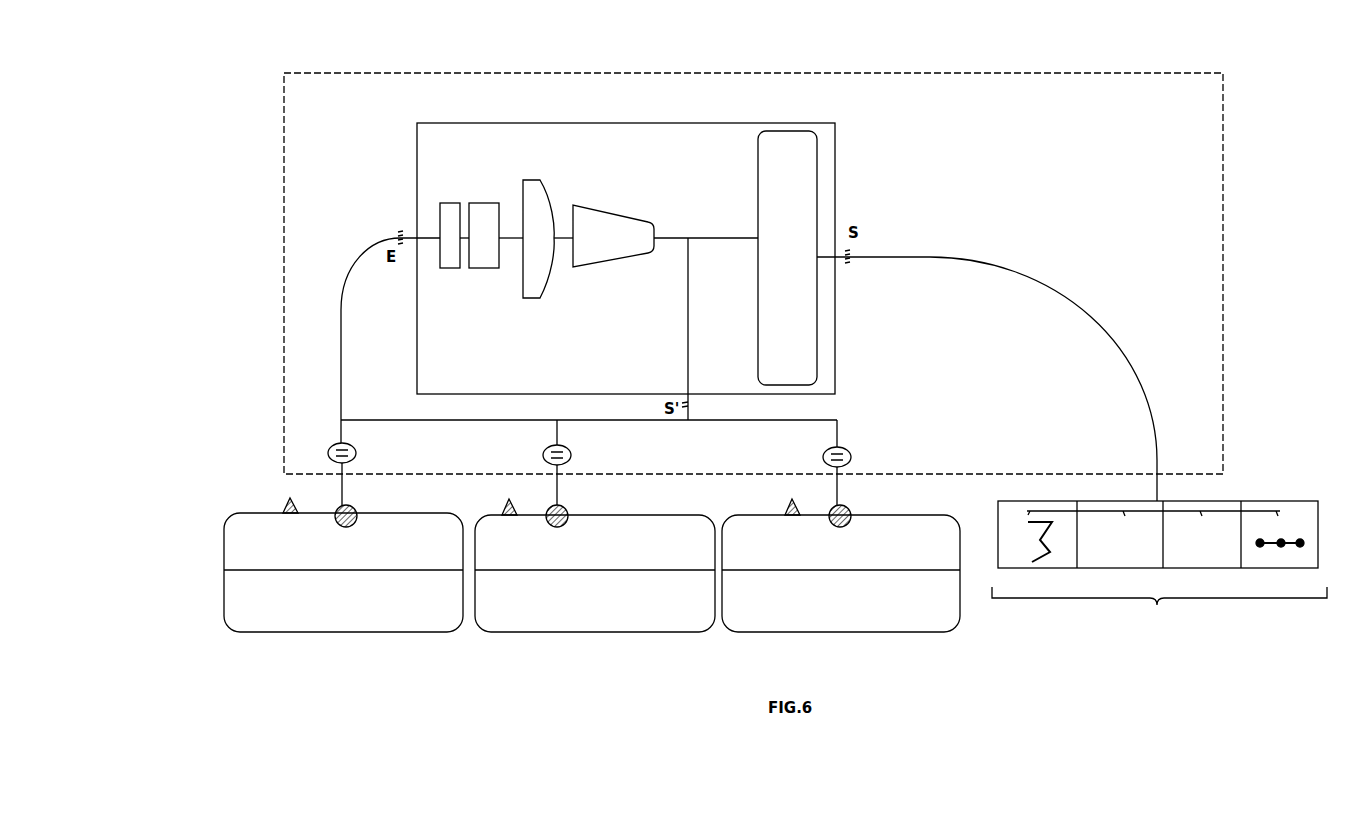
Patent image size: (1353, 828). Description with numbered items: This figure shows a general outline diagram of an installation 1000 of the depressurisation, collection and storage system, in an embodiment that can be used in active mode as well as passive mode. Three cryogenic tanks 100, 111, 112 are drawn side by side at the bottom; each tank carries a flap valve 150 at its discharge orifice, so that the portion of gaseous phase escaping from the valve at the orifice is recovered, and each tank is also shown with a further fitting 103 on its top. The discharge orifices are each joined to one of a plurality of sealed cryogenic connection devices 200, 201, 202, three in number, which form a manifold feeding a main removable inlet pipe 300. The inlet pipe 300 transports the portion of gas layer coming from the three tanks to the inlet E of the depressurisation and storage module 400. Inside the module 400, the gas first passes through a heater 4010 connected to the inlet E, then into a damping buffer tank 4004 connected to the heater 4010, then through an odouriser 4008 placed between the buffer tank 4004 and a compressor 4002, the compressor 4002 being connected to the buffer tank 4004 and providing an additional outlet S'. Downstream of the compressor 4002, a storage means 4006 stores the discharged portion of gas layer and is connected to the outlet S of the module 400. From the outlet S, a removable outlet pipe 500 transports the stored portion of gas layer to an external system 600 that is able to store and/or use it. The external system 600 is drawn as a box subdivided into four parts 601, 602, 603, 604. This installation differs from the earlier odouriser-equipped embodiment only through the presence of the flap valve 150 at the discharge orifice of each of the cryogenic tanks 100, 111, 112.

The vehicle system enclosure 1000 is at (1224, 345).
The depressurisation and storage module 400 is at (459, 122).
The heater 4010 is at (444, 225).
The damping buffer tank 4004 is at (488, 249).
The odouriser 4008 is at (535, 227).
The compressor 4002 is at (613, 250).
The storage means 4006 is at (764, 258).
The removable outlet pipe 500 is at (1037, 284).
The removable inlet pipe 300 is at (341, 297).
The connection device 200 is at (330, 445).
The connection device 201 is at (545, 450).
The connection device 202 is at (825, 452).
The cryogenic tank 100 is at (224, 615).
The cryogenic tank 111 is at (667, 632).
The cryogenic tank 112 is at (795, 632).
The level sensor 103 is at (287, 508).
The flap valve 150 is at (337, 509).
The external system 600 is at (1159, 573).
The connection module 601 is at (1280, 569).
The temperature module 602 is at (1213, 548).
The GNV fuel module 603 is at (1132, 549).
The electrical power module 604 is at (1048, 550).